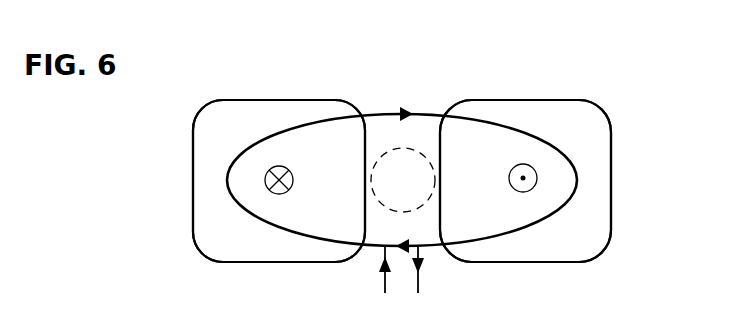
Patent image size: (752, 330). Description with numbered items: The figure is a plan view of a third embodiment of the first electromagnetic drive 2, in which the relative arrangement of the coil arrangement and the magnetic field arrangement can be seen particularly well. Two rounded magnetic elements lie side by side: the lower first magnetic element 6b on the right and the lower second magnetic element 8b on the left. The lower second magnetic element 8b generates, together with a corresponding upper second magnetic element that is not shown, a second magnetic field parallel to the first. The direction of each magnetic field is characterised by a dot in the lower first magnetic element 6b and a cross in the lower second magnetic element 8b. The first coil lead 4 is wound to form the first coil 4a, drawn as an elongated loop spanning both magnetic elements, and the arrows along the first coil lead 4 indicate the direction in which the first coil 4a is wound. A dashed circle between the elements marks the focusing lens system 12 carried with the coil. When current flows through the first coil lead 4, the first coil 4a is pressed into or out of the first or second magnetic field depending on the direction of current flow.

The first electromagnetic drive 2 is at (480, 82).
The first coil lead 4 is at (418, 280).
The first coil 4a is at (422, 114).
The lower first magnetic element 6b is at (611, 160).
The lower second magnetic element 8b is at (192, 170).
The focusing lens system 12 is at (413, 149).